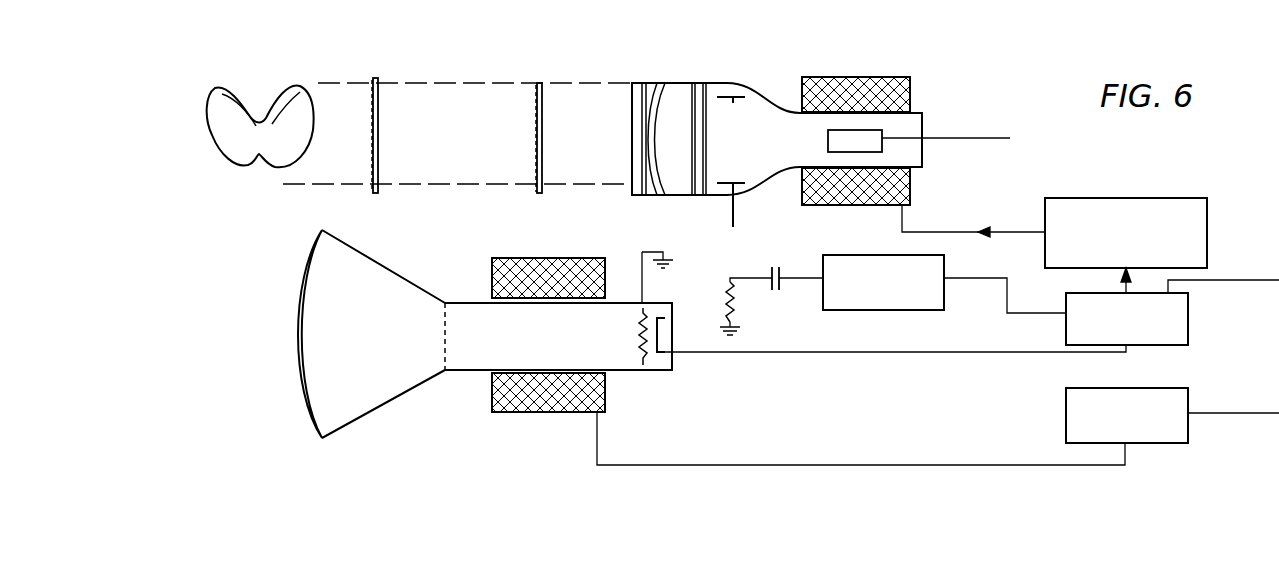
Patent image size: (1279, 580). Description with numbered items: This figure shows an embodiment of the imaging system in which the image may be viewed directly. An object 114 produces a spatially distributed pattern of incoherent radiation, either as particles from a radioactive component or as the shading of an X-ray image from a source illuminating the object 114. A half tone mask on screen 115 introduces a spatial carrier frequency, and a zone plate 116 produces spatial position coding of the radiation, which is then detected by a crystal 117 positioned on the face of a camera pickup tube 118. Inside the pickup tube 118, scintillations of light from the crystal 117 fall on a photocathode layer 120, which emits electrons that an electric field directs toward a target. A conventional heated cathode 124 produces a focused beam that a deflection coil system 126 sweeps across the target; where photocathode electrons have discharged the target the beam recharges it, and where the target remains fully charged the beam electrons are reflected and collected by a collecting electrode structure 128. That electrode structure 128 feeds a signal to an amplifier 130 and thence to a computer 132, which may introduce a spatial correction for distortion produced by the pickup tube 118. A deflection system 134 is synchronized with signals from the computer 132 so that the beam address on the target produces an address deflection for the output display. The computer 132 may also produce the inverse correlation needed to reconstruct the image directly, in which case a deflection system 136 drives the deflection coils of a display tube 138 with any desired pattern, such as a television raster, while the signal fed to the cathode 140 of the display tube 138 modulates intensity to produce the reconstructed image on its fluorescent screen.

The object 114 is at (285, 92).
The half tone mask on screen 115 is at (380, 82).
The zone plate 116 is at (542, 83).
The crystal 117 is at (638, 87).
The camera pickup tube 118 is at (816, 136).
The photocathode layer 120 is at (646, 197).
The heated cathode 124 is at (882, 147).
The deflection coil system 126 is at (849, 205).
The collecting electrode structure 128 is at (737, 100).
The amplifier 130 is at (912, 310).
The computer 132 is at (1188, 318).
The deflection system 134 is at (1074, 198).
The deflection system 136 is at (1066, 412).
The display tube 138 is at (450, 378).
The cathode 140 is at (659, 336).